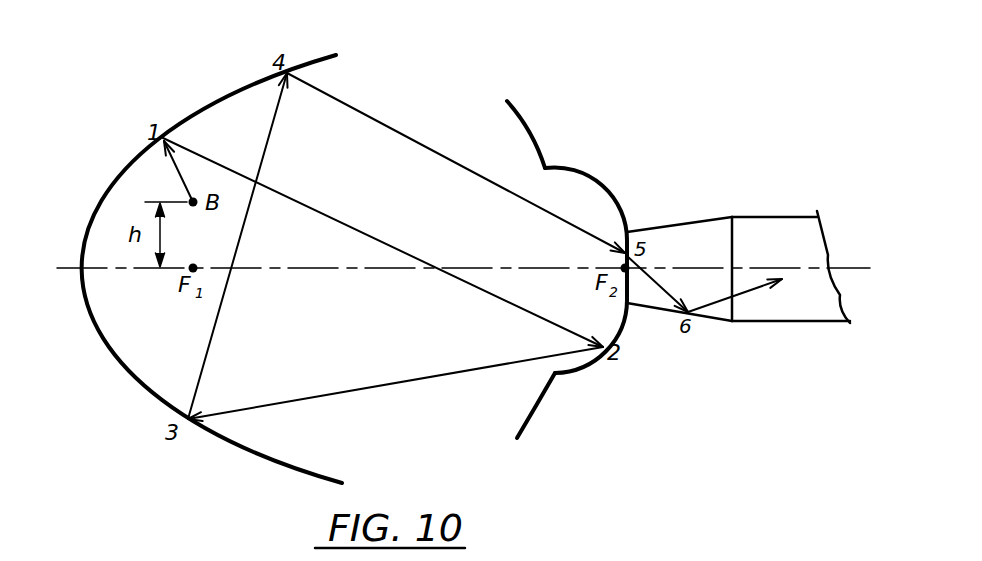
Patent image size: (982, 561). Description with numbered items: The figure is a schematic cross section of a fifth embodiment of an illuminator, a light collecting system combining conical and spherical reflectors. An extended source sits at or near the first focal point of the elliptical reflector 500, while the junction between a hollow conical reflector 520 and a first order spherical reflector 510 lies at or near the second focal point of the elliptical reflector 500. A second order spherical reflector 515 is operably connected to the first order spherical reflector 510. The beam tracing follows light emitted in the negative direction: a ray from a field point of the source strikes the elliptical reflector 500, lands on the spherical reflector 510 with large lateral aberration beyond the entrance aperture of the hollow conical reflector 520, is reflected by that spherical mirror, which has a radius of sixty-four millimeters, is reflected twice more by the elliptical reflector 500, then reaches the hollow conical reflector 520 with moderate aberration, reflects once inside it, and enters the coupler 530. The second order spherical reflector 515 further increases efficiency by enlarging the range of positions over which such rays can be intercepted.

The elliptical reflector 500 is at (237, 90).
The first order spherical reflector 510 is at (543, 147).
The second order spherical reflector 515 is at (520, 110).
The hollow conical reflector 520 is at (687, 220).
The coupler 530 is at (797, 212).